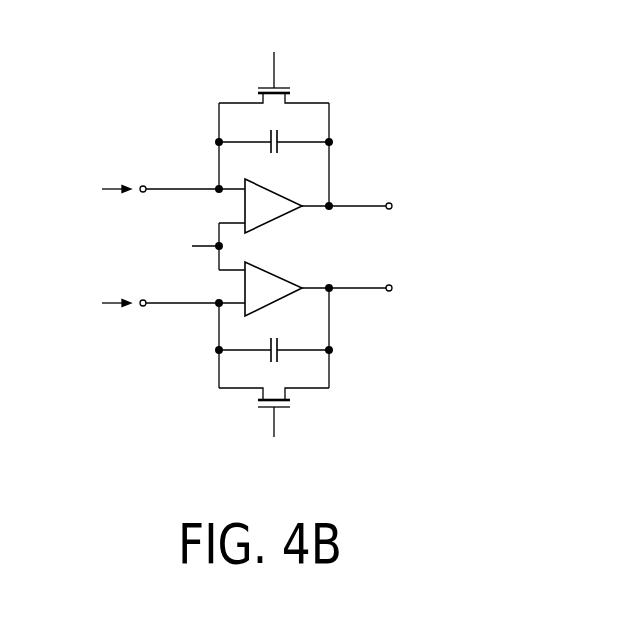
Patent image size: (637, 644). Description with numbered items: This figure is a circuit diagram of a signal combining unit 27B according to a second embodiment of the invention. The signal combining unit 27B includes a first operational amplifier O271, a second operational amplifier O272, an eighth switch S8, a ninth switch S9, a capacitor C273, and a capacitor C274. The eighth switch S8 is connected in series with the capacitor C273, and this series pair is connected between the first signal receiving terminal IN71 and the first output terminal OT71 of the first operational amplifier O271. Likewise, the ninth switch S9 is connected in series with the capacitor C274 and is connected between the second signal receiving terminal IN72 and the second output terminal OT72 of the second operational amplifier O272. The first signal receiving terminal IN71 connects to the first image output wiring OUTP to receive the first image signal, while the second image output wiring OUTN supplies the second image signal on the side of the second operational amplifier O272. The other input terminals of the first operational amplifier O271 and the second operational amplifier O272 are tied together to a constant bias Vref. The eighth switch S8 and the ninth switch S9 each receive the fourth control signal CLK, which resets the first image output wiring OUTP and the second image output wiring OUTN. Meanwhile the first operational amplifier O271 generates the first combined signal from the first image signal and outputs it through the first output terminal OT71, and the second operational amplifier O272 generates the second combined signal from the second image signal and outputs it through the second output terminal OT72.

The signal combining unit 27B is at (397, 78).
The eighth switch S8 is at (274, 77).
The ninth switch S9 is at (274, 412).
The capacitor C273 is at (274, 150).
The capacitor C274 is at (274, 359).
The first operational amplifier O271 is at (287, 209).
The second operational amplifier O272 is at (287, 285).
The first signal receiving terminal IN71 is at (192, 176).
The second signal receiving terminal IN72 is at (192, 316).
The first output terminal OT71 is at (362, 193).
The second output terminal OT72 is at (362, 302).
The fourth control signal CLK is at (276, 248).
The constant bias Vref is at (196, 246).
The first image output wiring OUTP is at (91, 188).
The second image output wiring OUTN is at (91, 302).